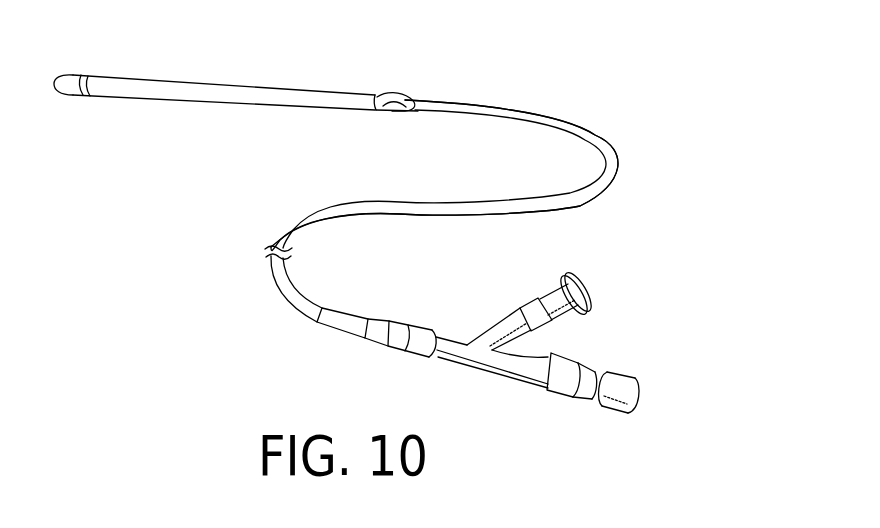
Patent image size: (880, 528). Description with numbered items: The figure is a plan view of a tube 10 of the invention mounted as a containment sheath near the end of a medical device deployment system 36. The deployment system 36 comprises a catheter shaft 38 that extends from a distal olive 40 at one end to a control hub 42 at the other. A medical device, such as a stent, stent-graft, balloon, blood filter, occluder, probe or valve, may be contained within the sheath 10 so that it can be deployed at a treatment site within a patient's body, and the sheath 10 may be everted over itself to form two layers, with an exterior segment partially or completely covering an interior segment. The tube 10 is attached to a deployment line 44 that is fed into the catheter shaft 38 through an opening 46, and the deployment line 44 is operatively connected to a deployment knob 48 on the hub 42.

The tube 10 is at (318, 69).
The medical device deployment system 36 is at (601, 86).
The catheter shaft 38 is at (607, 187).
The distal olive 40 is at (67, 74).
The control hub 42 is at (512, 362).
The deployment line 44 is at (408, 94).
The opening 46 is at (428, 108).
The deployment knob 48 is at (590, 283).